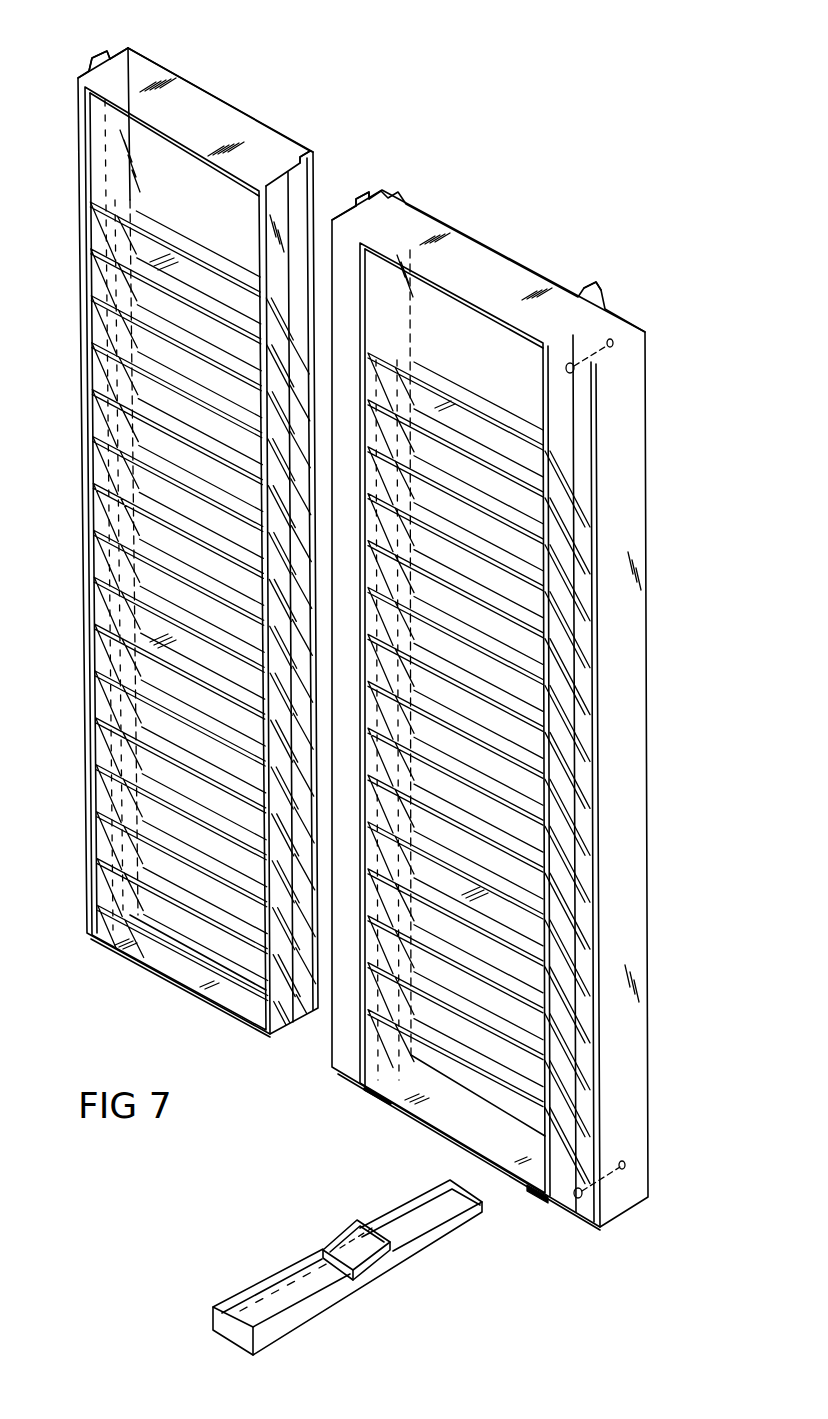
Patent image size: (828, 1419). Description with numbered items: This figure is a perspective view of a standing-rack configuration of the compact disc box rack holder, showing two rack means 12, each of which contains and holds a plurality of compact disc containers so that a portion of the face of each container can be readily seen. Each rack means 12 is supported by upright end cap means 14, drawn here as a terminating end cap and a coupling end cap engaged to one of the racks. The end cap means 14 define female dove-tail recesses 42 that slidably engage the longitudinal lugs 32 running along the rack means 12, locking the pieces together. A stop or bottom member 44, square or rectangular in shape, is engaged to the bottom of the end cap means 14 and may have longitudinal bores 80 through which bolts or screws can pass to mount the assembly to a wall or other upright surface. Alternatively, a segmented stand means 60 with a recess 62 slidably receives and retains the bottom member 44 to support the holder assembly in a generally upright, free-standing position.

The rack means 12 is at (201, 115).
The upright end cap means 14 is at (394, 197).
The longitudinal lug 32 is at (92, 60).
The female dove-tail recess 42 is at (362, 207).
The stop or bottom member 44 is at (362, 1090).
The stand means 60 is at (358, 1300).
The recess 62 is at (388, 1264).
The longitudinal bore 80 is at (604, 355).